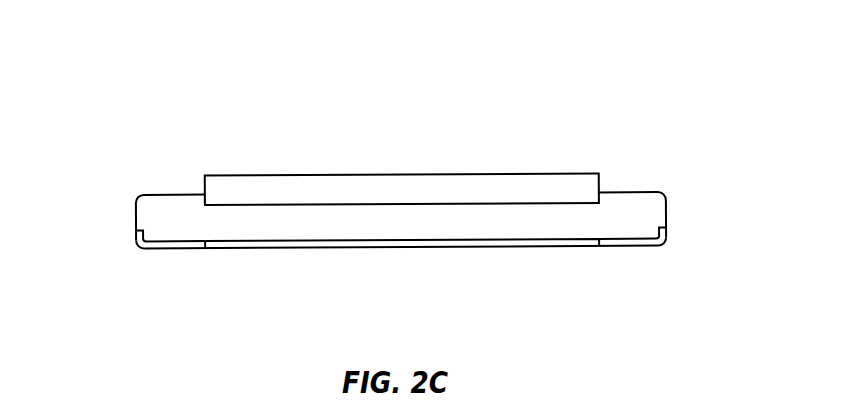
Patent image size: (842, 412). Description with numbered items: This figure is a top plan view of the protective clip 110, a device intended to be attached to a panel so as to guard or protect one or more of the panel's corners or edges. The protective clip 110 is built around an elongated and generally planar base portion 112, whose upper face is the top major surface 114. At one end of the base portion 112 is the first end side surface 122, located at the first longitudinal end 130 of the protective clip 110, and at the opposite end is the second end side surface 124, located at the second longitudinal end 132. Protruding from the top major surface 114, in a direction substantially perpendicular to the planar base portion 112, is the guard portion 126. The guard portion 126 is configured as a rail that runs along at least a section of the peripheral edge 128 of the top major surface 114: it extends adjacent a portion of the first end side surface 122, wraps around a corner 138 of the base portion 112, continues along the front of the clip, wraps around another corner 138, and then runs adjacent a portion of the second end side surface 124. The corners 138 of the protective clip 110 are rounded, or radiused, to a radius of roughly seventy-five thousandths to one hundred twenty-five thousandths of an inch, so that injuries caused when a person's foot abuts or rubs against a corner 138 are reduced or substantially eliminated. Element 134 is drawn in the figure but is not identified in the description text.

The protective clip 110 is at (175, 100).
The base portion 112 is at (637, 190).
The top major surface 114 is at (165, 205).
The first end side surface 122 is at (135, 215).
The second end side surface 124 is at (665, 207).
The guard portion 126 is at (345, 242).
The peripheral edge 128 is at (548, 247).
The first longitudinal end 130 is at (130, 228).
The second longitudinal end 132 is at (668, 232).
The display cover 134 is at (288, 183).
The corners 138 is at (132, 250).